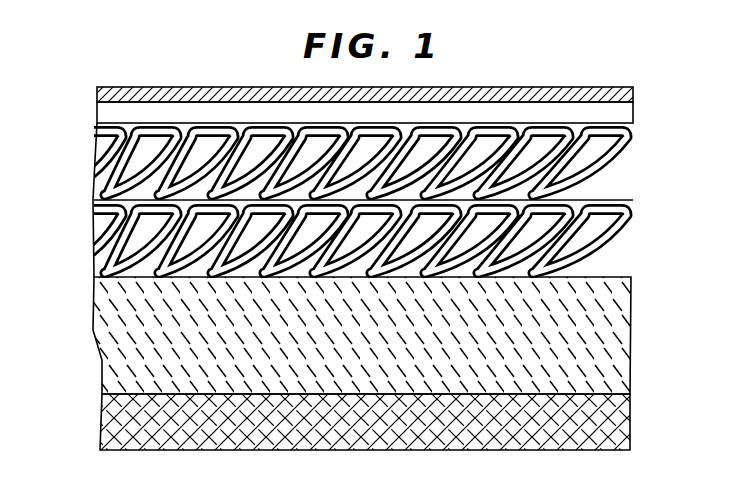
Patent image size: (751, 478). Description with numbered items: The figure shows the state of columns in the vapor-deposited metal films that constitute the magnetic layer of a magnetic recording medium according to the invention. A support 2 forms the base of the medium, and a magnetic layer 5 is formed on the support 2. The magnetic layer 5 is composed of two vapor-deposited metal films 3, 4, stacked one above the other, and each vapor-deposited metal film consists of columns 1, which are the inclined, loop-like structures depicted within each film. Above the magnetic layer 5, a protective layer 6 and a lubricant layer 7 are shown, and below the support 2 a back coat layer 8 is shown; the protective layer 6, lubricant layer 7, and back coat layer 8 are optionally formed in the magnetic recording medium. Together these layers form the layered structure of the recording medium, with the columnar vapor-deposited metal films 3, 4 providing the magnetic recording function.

The columns 1 is at (113, 235).
The support 2 is at (630, 348).
The vapor-deposited metal film 3 is at (660, 124).
The vapor-deposited metal film 4 is at (365, 238).
The magnetic layer 5 is at (385, 198).
The protective layer 6 is at (633, 114).
The lubricant layer 7 is at (633, 95).
The back coat layer 8 is at (630, 425).